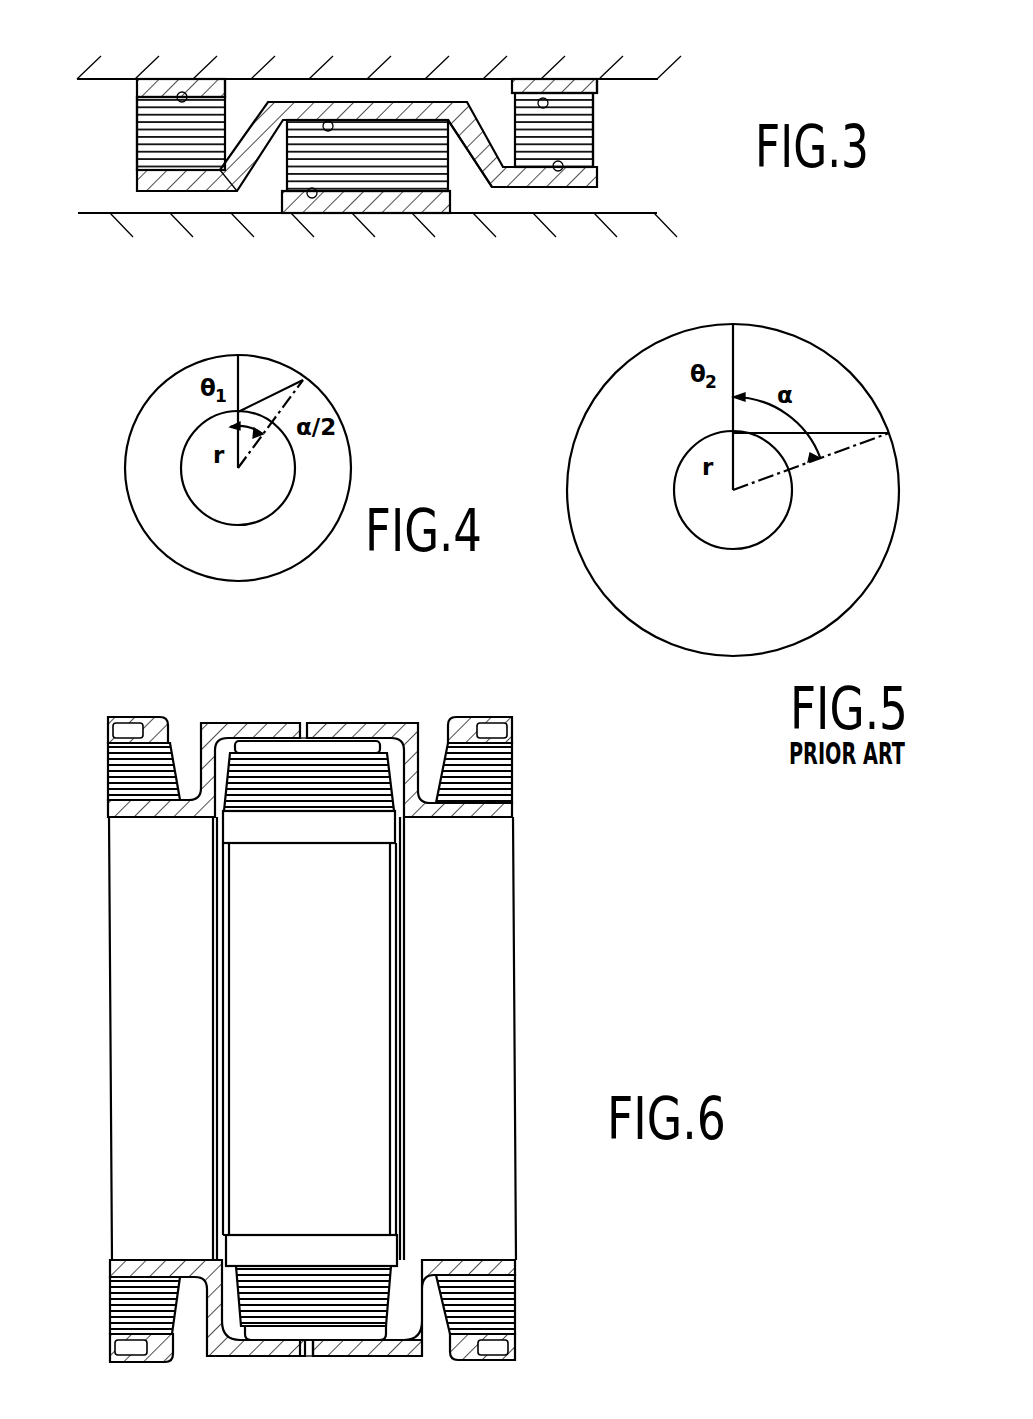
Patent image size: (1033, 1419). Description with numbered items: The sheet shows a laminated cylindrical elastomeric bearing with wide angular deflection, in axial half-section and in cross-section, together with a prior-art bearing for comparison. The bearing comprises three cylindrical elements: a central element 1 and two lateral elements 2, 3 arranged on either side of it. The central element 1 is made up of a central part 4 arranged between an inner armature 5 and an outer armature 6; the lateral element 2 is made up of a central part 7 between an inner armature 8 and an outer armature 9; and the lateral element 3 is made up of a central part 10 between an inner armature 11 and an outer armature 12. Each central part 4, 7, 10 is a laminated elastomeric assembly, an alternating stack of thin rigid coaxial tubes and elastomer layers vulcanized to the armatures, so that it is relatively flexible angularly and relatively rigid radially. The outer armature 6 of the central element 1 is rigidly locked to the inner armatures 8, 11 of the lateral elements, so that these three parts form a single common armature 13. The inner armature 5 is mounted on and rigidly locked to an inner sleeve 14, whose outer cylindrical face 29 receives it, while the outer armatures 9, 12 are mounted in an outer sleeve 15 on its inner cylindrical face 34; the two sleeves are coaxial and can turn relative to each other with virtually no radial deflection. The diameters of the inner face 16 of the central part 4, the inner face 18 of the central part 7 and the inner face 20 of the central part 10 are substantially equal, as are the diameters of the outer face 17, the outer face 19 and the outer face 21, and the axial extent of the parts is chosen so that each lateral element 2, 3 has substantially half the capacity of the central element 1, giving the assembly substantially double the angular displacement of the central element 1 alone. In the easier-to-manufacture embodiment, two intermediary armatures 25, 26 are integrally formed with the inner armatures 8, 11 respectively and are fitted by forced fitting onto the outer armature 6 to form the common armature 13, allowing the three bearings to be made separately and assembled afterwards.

In FIG. 3, the central element 1 is at (458, 183).
In FIG. 6, the central element 1 is at (345, 740).
In FIG. 3, the lateral element 2 is at (142, 145).
In FIG. 6, the lateral element 2 is at (107, 774).
In FIG. 3, the lateral element 3 is at (593, 143).
In FIG. 6, the lateral element 3 is at (514, 783).
In FIG. 3, the central part 4 is at (375, 137).
In FIG. 6, the central part 4 is at (322, 1283).
In FIG. 3, the inner armature 5 is at (340, 213).
In FIG. 6, the inner armature 5 is at (272, 1247).
In FIG. 3, the outer armature 6 is at (404, 110).
In FIG. 6, the outer armature 6 is at (328, 1348).
In FIG. 3, the central part 7 is at (142, 125).
In FIG. 6, the central part 7 is at (120, 1309).
In FIG. 3, the inner armature 8 is at (180, 187).
In FIG. 6, the inner armature 8 is at (153, 1267).
In FIG. 3, the outer armature 9 is at (153, 82).
In FIG. 6, the outer armature 9 is at (160, 1355).
In FIG. 3, the central part 10 is at (593, 127).
In FIG. 6, the central part 10 is at (500, 1304).
In FIG. 3, the inner armature 11 is at (530, 186).
In FIG. 6, the inner armature 11 is at (470, 1267).
In FIG. 3, the outer armature 12 is at (580, 78).
In FIG. 6, the outer armature 12 is at (472, 1353).
In FIG. 3, the common armature 13 is at (273, 100).
In FIG. 6, the common armature 13 is at (267, 722).
In FIG. 3, the inner sleeve 14 is at (218, 226).
In FIG. 3, the outer sleeve 15 is at (201, 58).
In FIG. 3, the inner face 16 is at (310, 197).
In FIG. 3, the outer face 17 is at (326, 120).
In FIG. 3, the inner face 18 is at (153, 167).
In FIG. 3, the outer face 19 is at (178, 92).
In FIG. 3, the inner face 20 is at (561, 173).
In FIG. 3, the outer face 21 is at (540, 97).
In FIG. 6, the intermediary armature 25 is at (228, 1348).
In FIG. 6, the intermediary armature 26 is at (400, 1348).
In FIG. 3, the outer cylindrical face 29 is at (650, 213).
In FIG. 3, the inner cylindrical face 34 is at (652, 79).